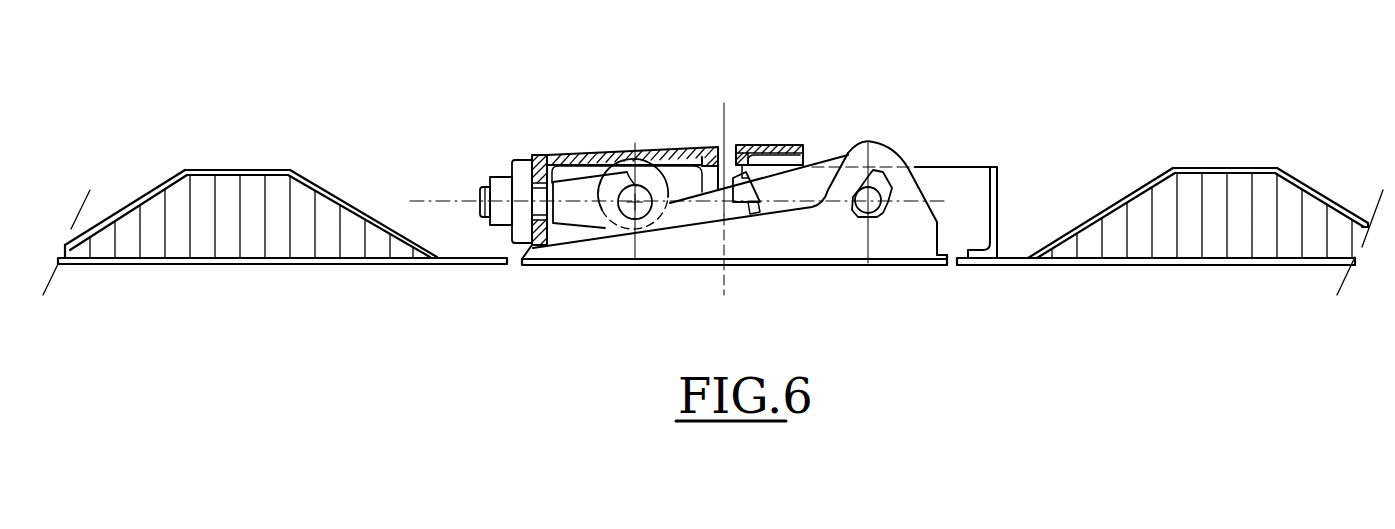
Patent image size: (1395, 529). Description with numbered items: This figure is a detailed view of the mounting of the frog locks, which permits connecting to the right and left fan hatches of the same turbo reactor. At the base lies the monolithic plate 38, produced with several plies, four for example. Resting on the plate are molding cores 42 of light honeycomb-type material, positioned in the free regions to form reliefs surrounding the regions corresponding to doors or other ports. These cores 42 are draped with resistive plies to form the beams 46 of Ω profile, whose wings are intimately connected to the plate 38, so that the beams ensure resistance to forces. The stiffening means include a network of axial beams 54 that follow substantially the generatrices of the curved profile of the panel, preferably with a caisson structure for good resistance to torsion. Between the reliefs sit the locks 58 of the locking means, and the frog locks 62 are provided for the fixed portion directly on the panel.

The plate 38 is at (350, 265).
The molding cores 42 is at (275, 195).
The beams 46 is at (332, 188).
The axial beams 54 is at (155, 178).
The locks 58 is at (592, 120).
The frog locks 62 is at (785, 133).